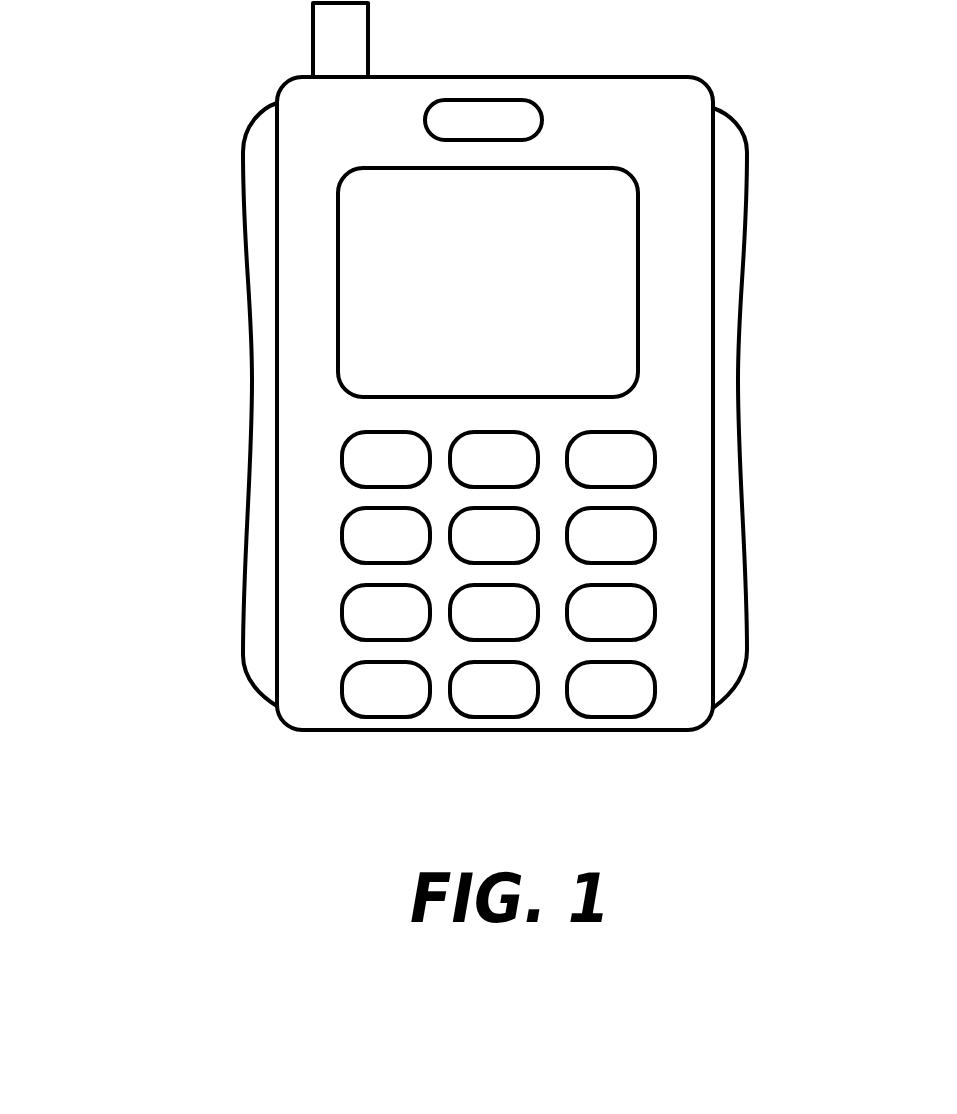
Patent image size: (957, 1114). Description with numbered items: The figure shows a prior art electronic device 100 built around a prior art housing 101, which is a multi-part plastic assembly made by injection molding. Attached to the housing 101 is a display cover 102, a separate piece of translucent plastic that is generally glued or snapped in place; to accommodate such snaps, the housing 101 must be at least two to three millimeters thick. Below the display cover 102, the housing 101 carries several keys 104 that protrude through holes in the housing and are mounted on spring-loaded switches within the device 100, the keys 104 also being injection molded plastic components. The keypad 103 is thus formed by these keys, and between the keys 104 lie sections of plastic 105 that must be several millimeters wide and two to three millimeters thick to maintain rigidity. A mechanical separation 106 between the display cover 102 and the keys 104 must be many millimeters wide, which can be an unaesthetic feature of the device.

The electronic device 100 is at (450, 387).
The housing 101 is at (303, 258).
The display cover 102 is at (522, 288).
The keypad 103 is at (479, 574).
The keys 104 is at (377, 610).
The sections of plastic 105 is at (385, 573).
The mechanical separation 106 is at (528, 416).